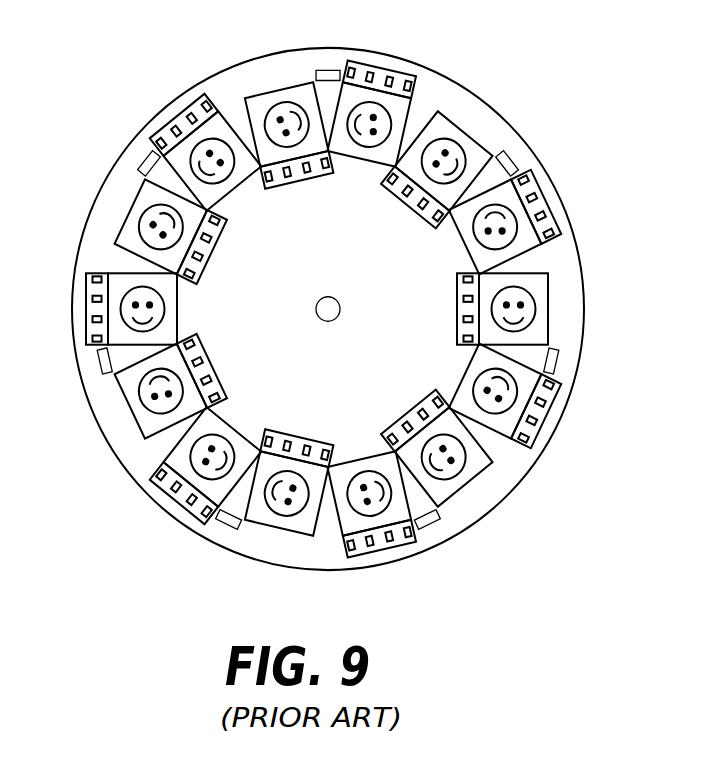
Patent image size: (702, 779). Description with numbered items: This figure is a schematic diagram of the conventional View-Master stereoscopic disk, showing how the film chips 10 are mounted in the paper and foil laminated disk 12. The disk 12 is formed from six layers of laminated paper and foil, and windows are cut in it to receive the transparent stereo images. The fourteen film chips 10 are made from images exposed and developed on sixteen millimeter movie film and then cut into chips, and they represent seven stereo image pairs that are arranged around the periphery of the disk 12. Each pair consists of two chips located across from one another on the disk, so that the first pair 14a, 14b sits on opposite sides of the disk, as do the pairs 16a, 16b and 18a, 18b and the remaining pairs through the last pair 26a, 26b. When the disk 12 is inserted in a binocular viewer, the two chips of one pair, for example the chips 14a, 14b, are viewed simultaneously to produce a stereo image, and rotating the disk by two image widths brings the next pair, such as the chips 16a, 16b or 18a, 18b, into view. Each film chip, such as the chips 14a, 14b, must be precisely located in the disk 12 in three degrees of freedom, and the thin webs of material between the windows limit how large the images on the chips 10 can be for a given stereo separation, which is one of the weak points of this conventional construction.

The film chips 10 is at (72, 307).
The paper and foil laminated disk 12 is at (499, 137).
The stereo image pair film chip 14a is at (88, 283).
The stereo image pair film chip 14b is at (551, 285).
The stereo image pair film chip 16a is at (173, 503).
The stereo image pair film chip 16b is at (466, 128).
The stereo image pair film chip 18a is at (388, 549).
The stereo image pair film chip 18b is at (267, 88).
The stereo image pair film chip 26a is at (180, 115).
The stereo image pair film chip 26b is at (468, 483).